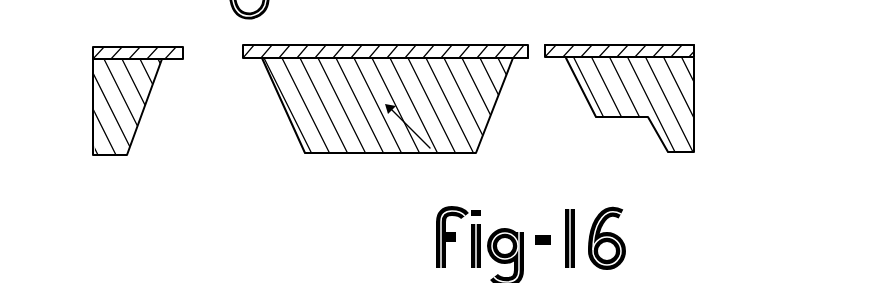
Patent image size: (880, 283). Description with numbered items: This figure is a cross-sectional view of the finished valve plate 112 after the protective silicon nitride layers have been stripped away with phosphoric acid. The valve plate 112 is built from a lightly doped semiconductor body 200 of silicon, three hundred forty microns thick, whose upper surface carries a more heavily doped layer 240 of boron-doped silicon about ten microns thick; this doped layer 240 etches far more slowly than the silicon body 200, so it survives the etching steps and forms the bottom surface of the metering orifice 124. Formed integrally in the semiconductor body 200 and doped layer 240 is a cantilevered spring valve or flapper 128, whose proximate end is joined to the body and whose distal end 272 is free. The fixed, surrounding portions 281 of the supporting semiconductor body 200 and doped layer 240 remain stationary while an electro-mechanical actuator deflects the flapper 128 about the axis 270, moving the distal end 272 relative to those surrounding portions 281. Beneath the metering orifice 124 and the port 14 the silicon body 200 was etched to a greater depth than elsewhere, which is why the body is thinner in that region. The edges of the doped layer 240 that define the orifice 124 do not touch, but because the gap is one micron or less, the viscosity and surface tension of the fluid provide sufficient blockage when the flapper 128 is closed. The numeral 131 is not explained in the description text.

The port 14 is at (197, 42).
The valve plate 112 is at (75, 152).
The cantilevered spring valve or flapper 128 is at (454, 36).
The metering orifice 124 is at (544, 36).
The fixed surrounding portions 281 is at (557, 42).
The doped layer 240 is at (696, 44).
The semiconductor body 200 is at (697, 94).
The distal end 272 is at (523, 61).
The axis 270 is at (436, 152).
The hatched body portion 131 is at (394, 126).